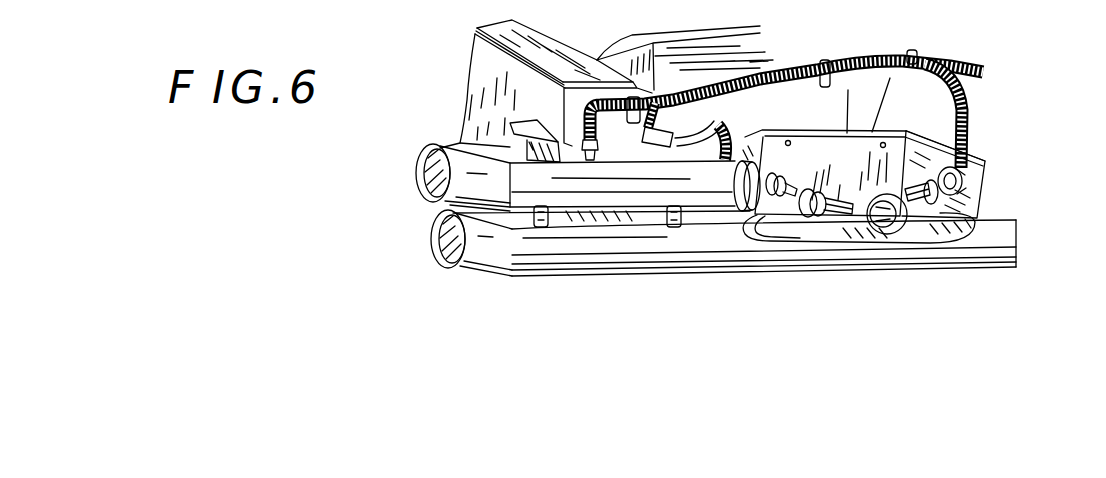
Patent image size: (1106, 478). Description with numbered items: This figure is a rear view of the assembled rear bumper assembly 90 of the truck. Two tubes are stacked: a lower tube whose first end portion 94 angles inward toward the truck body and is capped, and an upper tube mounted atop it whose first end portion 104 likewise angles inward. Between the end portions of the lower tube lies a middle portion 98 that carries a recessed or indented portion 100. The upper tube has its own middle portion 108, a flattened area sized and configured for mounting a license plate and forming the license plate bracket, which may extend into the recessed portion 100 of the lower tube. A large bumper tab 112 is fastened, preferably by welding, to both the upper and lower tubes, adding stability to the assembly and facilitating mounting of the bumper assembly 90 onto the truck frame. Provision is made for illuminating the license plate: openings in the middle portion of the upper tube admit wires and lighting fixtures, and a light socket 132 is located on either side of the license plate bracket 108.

The rear bumper assembly 90 is at (1005, 144).
The first end portion 94 is at (430, 243).
The middle portion 98 is at (837, 272).
The recessed portion 100 is at (930, 230).
The first end portion 104 is at (417, 168).
The middle portion 108 is at (913, 157).
The large bumper tab 112 is at (677, 227).
The light socket 132 is at (977, 198).